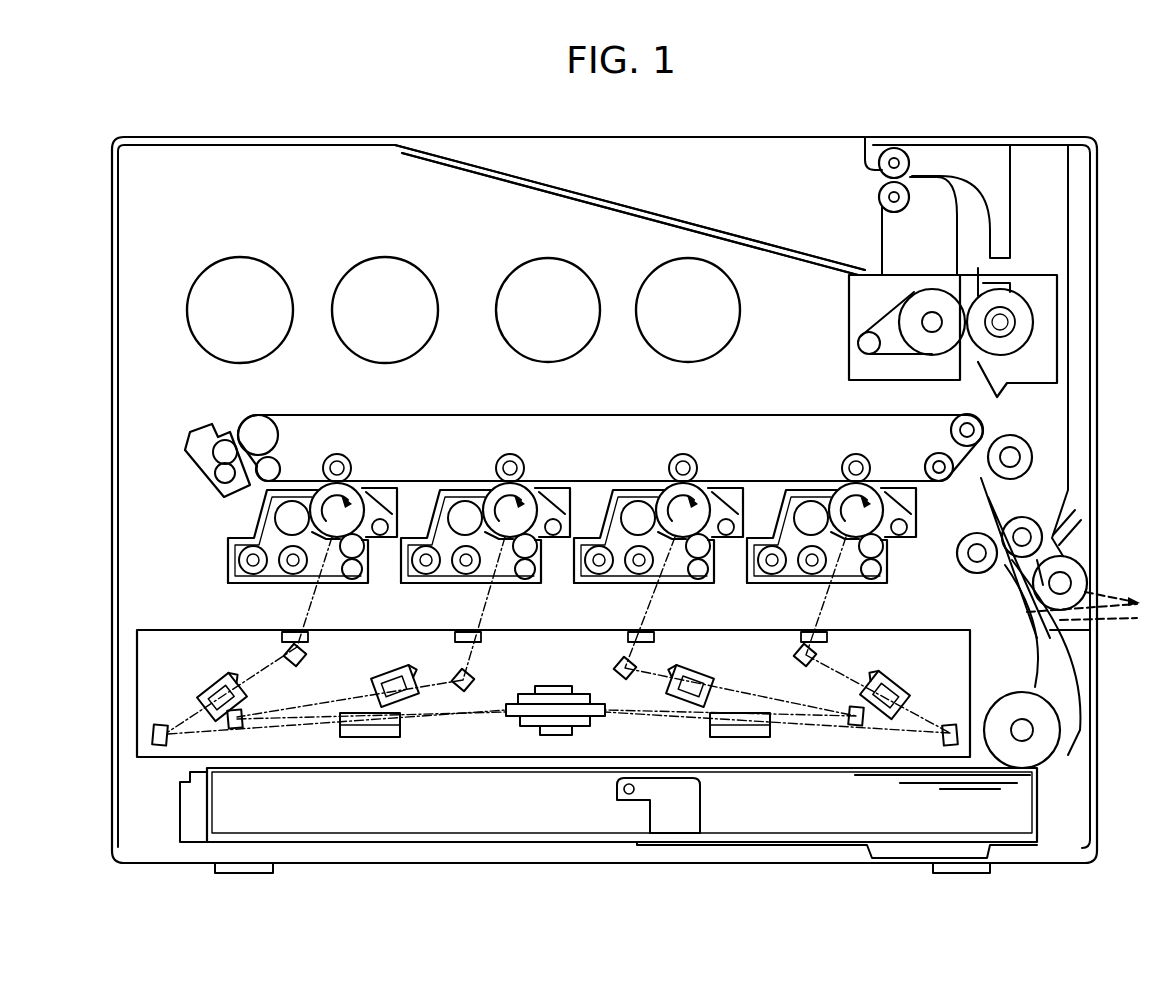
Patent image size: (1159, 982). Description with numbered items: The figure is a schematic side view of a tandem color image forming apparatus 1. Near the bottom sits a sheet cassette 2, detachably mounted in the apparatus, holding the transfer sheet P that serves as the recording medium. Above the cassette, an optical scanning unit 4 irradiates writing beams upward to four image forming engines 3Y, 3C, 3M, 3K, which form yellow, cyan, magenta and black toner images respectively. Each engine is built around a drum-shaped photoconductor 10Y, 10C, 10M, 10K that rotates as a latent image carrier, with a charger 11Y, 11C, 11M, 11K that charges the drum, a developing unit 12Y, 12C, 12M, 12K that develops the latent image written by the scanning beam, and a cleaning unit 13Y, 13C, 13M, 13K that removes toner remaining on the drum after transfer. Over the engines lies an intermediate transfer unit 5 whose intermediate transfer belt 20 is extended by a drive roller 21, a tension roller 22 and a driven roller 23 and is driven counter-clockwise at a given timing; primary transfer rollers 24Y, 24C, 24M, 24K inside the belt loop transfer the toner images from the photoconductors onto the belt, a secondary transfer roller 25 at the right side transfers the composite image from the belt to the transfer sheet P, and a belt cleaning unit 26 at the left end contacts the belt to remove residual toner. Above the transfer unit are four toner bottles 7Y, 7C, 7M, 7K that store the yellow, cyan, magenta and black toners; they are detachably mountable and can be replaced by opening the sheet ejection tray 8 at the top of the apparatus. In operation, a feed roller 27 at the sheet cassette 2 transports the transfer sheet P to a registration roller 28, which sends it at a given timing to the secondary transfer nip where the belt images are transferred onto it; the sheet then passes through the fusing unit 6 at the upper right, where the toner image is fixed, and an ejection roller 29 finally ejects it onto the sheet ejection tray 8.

The image forming apparatus 1 is at (790, 112).
The sheet cassette 2 is at (898, 842).
The image forming engine 3Y is at (295, 470).
The image forming engine 3C is at (468, 470).
The image forming engine 3M is at (640, 470).
The image forming engine 3K is at (812, 470).
The optical scanning unit 4 is at (160, 628).
The intermediate transfer unit 5 is at (590, 445).
The fusing unit 6 is at (1045, 262).
The toner bottle 7Y is at (262, 262).
The toner bottle 7C is at (422, 253).
The toner bottle 7M is at (602, 263).
The toner bottle 7K is at (736, 292).
The sheet ejection tray 8 is at (703, 222).
The photoconductor 10Y is at (358, 492).
The photoconductor 10C is at (531, 492).
The photoconductor 10M is at (704, 492).
The photoconductor 10K is at (876, 492).
The charger 11Y is at (356, 593).
The charger 11C is at (529, 593).
The charger 11M is at (701, 593).
The charger 11K is at (874, 593).
The developing unit 12Y is at (272, 596).
The developing unit 12C is at (456, 596).
The developing unit 12M is at (630, 596).
The developing unit 12K is at (802, 596).
The cleaning unit 13Y is at (410, 503).
The cleaning unit 13C is at (584, 503).
The cleaning unit 13M is at (756, 503).
The cleaning unit 13K is at (928, 528).
The intermediate transfer belt 20 is at (727, 412).
The drive roller 21 is at (957, 420).
The tension roller 22 is at (932, 462).
The driven roller 23 is at (244, 422).
The primary transfer roller 24Y is at (350, 453).
The primary transfer roller 24C is at (523, 453).
The primary transfer roller 24M is at (696, 453).
The primary transfer roller 24K is at (868, 453).
The secondary transfer roller 25 is at (1033, 455).
The belt cleaning unit 26 is at (178, 447).
The feed roller 27 is at (1020, 692).
The registration roller 28 is at (1048, 500).
The ejection roller 29 is at (925, 148).
The transfer sheet P is at (975, 795).